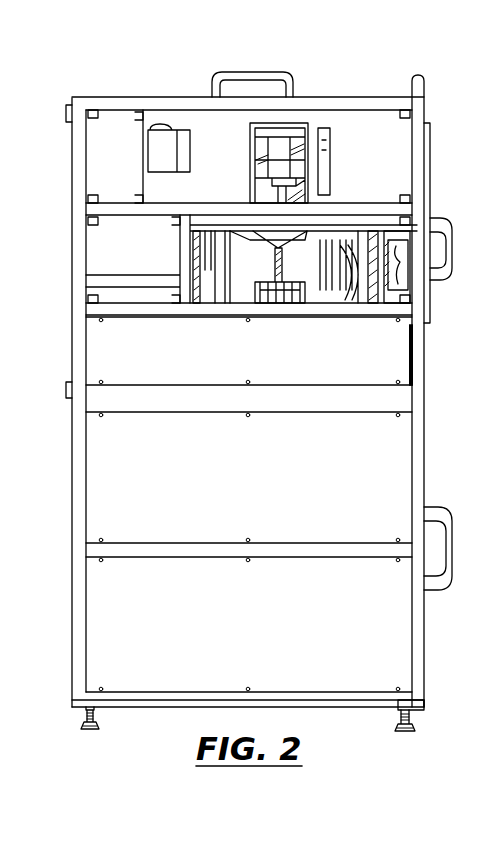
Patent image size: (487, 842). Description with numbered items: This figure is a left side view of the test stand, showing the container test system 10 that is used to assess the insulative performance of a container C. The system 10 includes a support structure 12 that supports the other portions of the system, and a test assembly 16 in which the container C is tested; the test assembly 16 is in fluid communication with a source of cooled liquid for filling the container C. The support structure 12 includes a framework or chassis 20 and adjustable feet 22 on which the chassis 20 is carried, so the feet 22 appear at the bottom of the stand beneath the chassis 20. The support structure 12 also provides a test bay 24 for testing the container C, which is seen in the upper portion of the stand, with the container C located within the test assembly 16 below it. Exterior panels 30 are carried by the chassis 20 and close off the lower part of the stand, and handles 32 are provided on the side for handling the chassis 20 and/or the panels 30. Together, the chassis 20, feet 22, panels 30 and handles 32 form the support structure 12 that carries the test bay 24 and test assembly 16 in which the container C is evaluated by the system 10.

The container test system 10 is at (366, 58).
The support structure 12 is at (70, 707).
The test assembly 16 is at (318, 194).
The chassis 20 is at (412, 700).
The adjustable feet 22 is at (88, 730).
The test bay 24 is at (232, 166).
The exterior panels 30 is at (107, 597).
The handles 32 is at (440, 508).
The container C is at (260, 263).